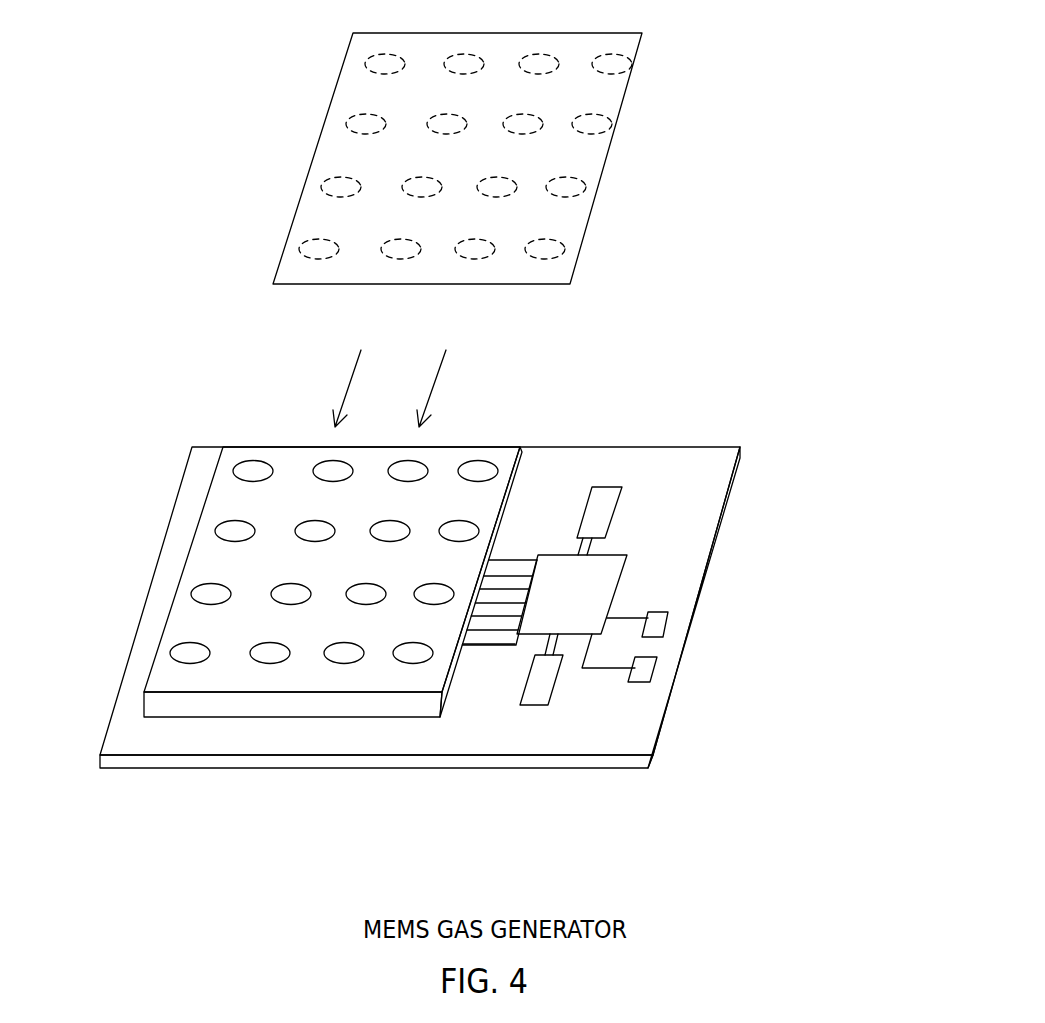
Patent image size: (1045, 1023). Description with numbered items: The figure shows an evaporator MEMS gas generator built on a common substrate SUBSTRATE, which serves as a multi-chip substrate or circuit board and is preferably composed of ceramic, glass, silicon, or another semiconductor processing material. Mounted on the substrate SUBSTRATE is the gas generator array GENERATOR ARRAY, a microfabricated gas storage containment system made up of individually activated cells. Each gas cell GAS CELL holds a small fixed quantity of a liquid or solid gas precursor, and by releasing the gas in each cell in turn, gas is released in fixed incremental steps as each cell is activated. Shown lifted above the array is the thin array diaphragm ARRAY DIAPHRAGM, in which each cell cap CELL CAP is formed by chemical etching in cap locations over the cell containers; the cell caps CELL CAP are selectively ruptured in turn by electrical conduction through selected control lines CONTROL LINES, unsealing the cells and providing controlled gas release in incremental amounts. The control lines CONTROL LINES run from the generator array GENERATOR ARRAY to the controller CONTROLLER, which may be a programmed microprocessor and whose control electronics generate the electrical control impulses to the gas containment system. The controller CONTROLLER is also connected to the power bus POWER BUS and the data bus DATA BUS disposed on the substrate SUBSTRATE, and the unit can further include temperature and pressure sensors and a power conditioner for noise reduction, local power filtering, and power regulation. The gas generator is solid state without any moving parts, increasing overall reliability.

The array diaphragm ARRAY DIAPHRAGM is at (613, 147).
The cell cap CELL CAP is at (562, 250).
The gas generator array GENERATOR ARRAY is at (273, 390).
The gas cell GAS CELL is at (357, 652).
The substrate SUBSTRATE is at (197, 768).
The control lines CONTROL LINES is at (518, 558).
The controller CONTROLLER is at (622, 573).
The power bus POWER BUS is at (667, 620).
The data bus DATA BUS is at (652, 670).